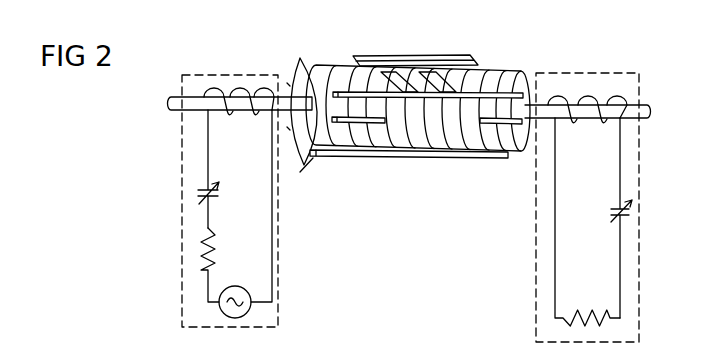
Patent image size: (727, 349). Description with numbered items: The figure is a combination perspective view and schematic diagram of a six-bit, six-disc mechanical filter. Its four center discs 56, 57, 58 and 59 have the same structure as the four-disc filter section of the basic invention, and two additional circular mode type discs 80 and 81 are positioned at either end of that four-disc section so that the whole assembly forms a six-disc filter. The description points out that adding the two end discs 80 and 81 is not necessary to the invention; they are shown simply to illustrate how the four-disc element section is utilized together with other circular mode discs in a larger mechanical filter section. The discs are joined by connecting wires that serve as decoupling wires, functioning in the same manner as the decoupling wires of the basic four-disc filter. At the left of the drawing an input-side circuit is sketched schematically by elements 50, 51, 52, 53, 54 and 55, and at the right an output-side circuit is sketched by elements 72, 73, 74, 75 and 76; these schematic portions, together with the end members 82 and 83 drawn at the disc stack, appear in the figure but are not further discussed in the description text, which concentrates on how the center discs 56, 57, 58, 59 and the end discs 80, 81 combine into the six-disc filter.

The input circuit 50 is at (330, 272).
The alternating current source 51 is at (246, 313).
The resistor 52 is at (215, 243).
The variable capacitor 53 is at (214, 197).
The input coil 54 is at (226, 118).
The input shaft 55 is at (177, 108).
The center disc 56 is at (347, 68).
The center disc 57 is at (390, 82).
The center disc 58 is at (427, 87).
The center disc 59 is at (478, 82).
The output circuit 72 is at (536, 289).
The load resistor 73 is at (588, 315).
The variable capacitor 74 is at (613, 210).
The output coil 75 is at (576, 126).
The output shaft 76 is at (636, 108).
The circular mode type disc 80 is at (338, 142).
The circular mode type disc 81 is at (511, 148).
The end plate 82 is at (300, 64).
The supporting rod 83 is at (301, 174).